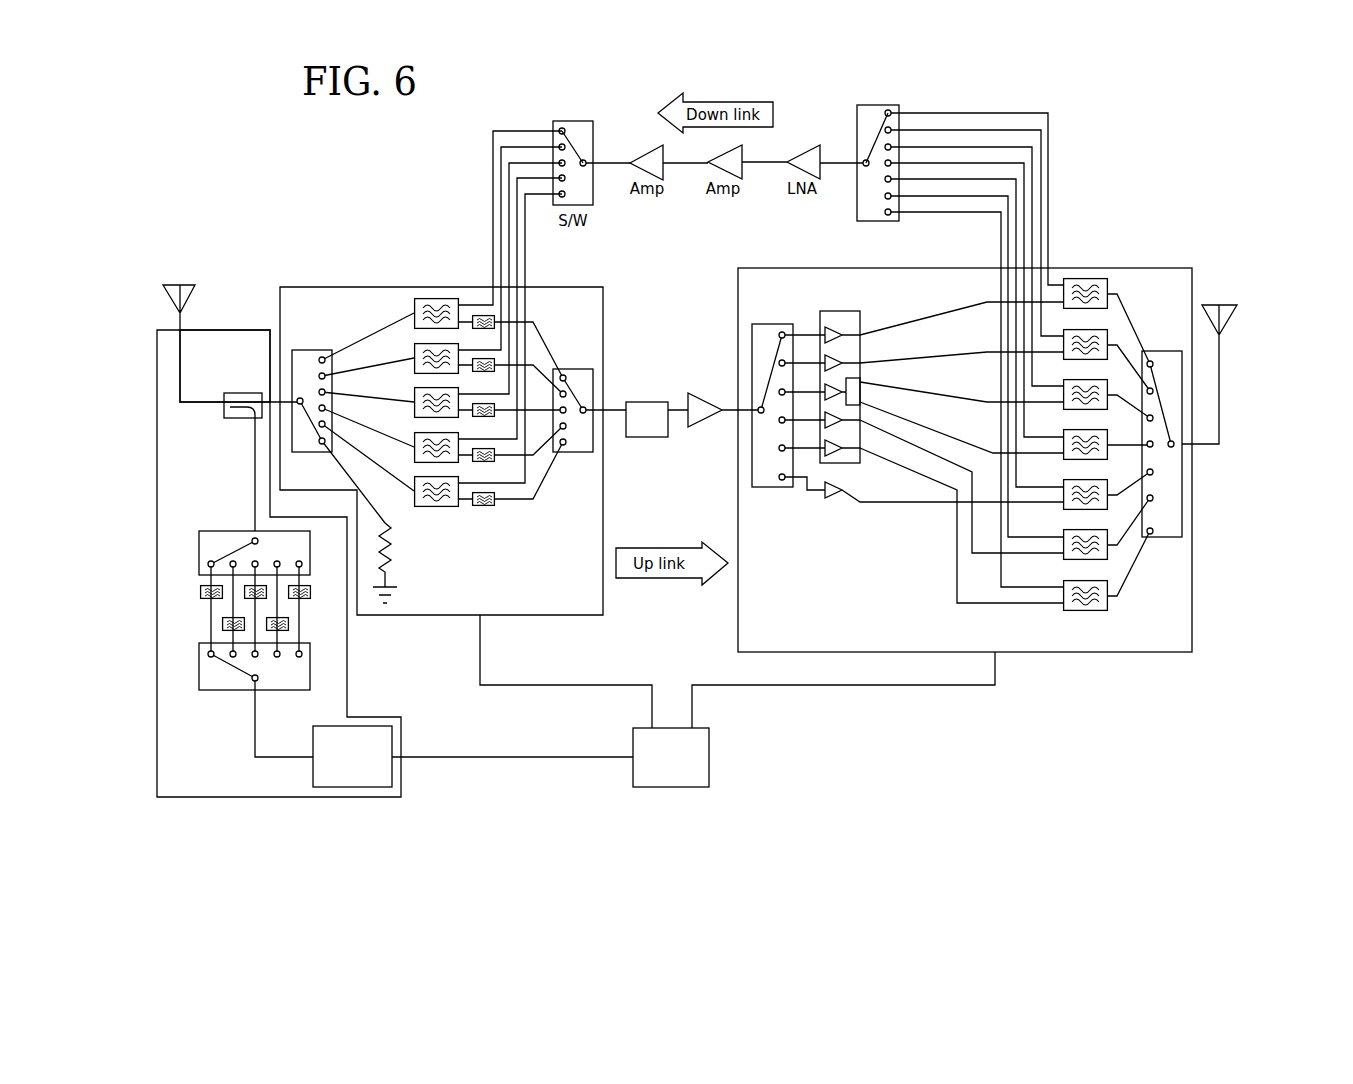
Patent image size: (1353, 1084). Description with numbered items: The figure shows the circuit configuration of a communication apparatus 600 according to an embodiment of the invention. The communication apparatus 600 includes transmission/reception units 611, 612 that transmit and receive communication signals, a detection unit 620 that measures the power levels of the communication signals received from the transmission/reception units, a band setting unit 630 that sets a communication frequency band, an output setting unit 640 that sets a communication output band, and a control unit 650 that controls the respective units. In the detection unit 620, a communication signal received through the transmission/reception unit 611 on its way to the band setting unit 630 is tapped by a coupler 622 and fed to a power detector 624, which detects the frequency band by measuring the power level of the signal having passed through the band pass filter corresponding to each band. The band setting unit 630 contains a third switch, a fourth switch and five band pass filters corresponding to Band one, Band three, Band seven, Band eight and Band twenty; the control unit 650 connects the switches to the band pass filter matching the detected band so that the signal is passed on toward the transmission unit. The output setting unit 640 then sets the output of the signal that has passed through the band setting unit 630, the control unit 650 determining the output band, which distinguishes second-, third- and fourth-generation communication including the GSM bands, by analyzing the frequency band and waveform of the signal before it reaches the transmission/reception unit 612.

The communication apparatus 600 is at (1025, 97).
The transmission/reception unit 611 is at (192, 298).
The transmission/reception unit 612 is at (1238, 303).
The detection unit 620 is at (244, 798).
The coupler 622 is at (235, 418).
The power detector 624 is at (355, 788).
The band setting unit 630 is at (376, 287).
The output setting unit 640 is at (423, 616).
The control unit 650 is at (709, 757).